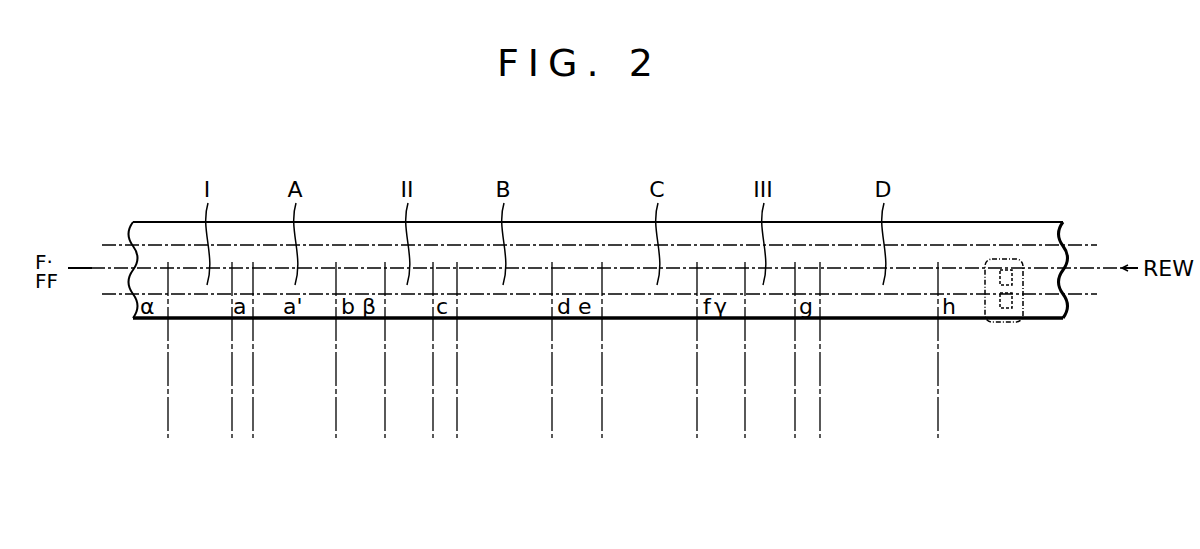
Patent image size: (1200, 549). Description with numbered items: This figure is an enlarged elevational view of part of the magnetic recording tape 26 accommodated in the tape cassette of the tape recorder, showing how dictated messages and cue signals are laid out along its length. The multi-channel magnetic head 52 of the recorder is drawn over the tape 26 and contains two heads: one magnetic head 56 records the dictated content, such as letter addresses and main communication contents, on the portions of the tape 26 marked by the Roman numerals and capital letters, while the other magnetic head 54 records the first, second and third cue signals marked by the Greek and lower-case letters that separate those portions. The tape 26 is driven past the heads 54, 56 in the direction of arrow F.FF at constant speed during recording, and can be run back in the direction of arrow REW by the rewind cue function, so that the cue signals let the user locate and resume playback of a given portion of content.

The magnetic recording tape 26 is at (1034, 221).
The multi-channel magnetic head 52 is at (1016, 306).
The other magnetic head 54 is at (1006, 306).
The one magnetic head 56 is at (1002, 274).